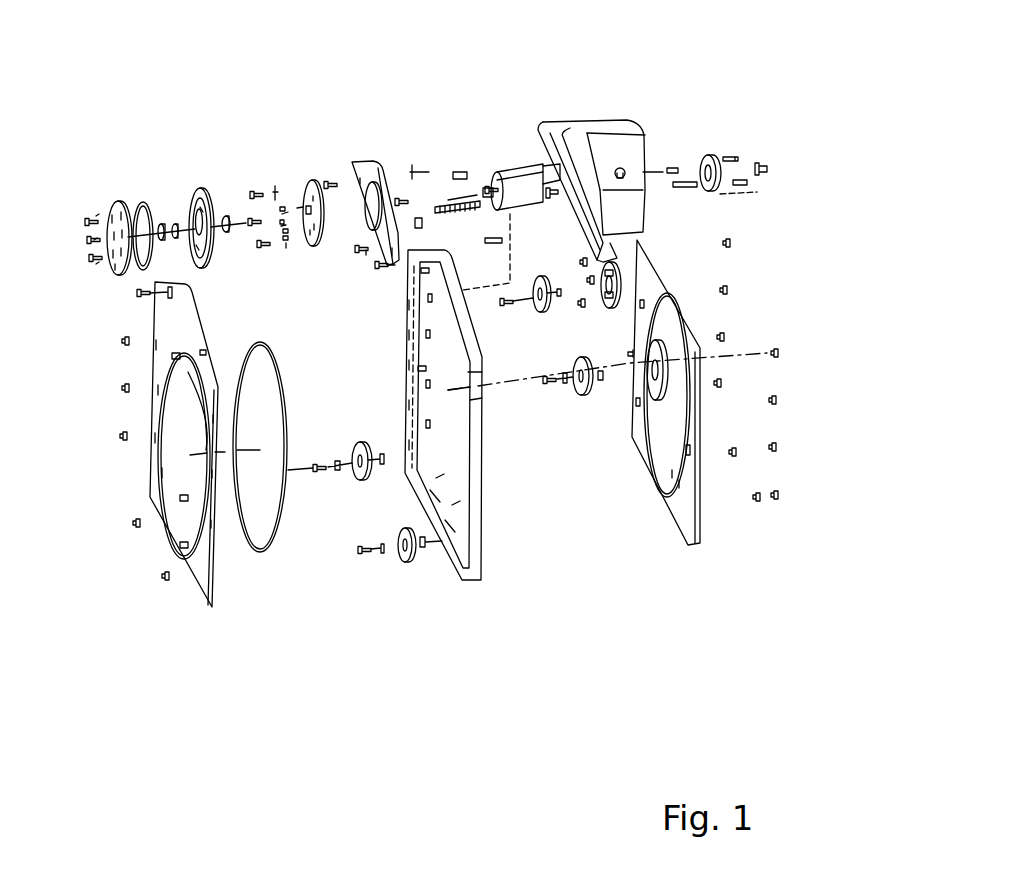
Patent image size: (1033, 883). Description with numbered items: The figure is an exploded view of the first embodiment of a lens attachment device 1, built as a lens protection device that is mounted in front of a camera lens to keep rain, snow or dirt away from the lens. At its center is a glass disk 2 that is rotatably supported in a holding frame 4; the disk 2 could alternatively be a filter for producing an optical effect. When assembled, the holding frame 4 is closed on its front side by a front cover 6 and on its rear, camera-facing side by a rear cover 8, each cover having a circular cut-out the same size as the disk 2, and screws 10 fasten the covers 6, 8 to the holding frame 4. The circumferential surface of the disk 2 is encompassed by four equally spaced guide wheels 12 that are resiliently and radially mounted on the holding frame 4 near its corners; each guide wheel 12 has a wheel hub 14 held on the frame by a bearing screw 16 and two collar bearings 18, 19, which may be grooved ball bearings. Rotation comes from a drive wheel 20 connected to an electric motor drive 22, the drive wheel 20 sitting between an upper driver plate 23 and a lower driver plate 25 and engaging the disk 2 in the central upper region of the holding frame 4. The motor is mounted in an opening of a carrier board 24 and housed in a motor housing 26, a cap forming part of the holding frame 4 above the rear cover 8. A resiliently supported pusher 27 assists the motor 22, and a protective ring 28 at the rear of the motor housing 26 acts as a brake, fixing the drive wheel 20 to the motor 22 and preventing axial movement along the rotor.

The lens attachment device 1 is at (382, 84).
The disk 2 is at (252, 342).
The holding frame 4 is at (466, 578).
The front cover 6 is at (212, 610).
The rear cover 8 is at (697, 545).
The screws 10 is at (782, 497).
The guide wheels 12 is at (366, 577).
The wheel hub 14 is at (389, 557).
The bearing screw 16 is at (346, 542).
The collar bearing 18 is at (422, 548).
The collar bearing 19 is at (381, 550).
The drive wheel 20 is at (182, 191).
The electric motor drive 22 is at (493, 183).
The upper driver plate 23 is at (118, 204).
The carrier board 24 is at (357, 158).
The lower driver plate 25 is at (199, 180).
The motor housing 26 is at (623, 123).
The pusher 27 is at (547, 200).
The protective ring 28 is at (712, 155).